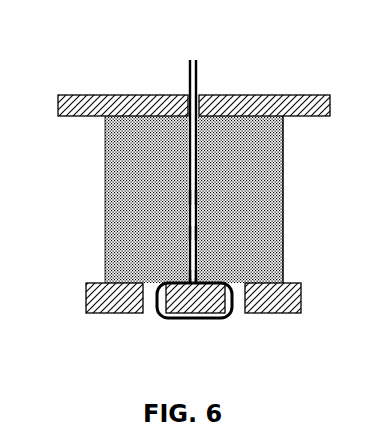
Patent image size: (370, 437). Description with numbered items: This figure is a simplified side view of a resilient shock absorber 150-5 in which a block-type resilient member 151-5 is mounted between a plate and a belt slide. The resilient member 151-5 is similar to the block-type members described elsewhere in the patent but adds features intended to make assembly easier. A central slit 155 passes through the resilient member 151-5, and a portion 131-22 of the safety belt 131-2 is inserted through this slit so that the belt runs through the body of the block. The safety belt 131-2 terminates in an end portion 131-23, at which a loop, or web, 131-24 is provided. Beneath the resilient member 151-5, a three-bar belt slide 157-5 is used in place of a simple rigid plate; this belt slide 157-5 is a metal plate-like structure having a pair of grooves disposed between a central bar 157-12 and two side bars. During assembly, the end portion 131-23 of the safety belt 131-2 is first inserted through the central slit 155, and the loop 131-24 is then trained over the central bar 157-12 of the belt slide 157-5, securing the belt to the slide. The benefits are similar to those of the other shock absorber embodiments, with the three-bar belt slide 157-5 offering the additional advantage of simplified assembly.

The resilient shock absorber 150-5 is at (65, 77).
The safety belt 131-2 is at (193, 60).
The portion 131-22 is at (188, 197).
The central slit 155 is at (188, 233).
The end portion 131-23 is at (188, 277).
The loop 131-24 is at (158, 315).
The block-type resilient member 151-5 is at (285, 198).
The 3-bar belt slide 157-5 is at (303, 282).
The central bar 157-12 is at (193, 318).